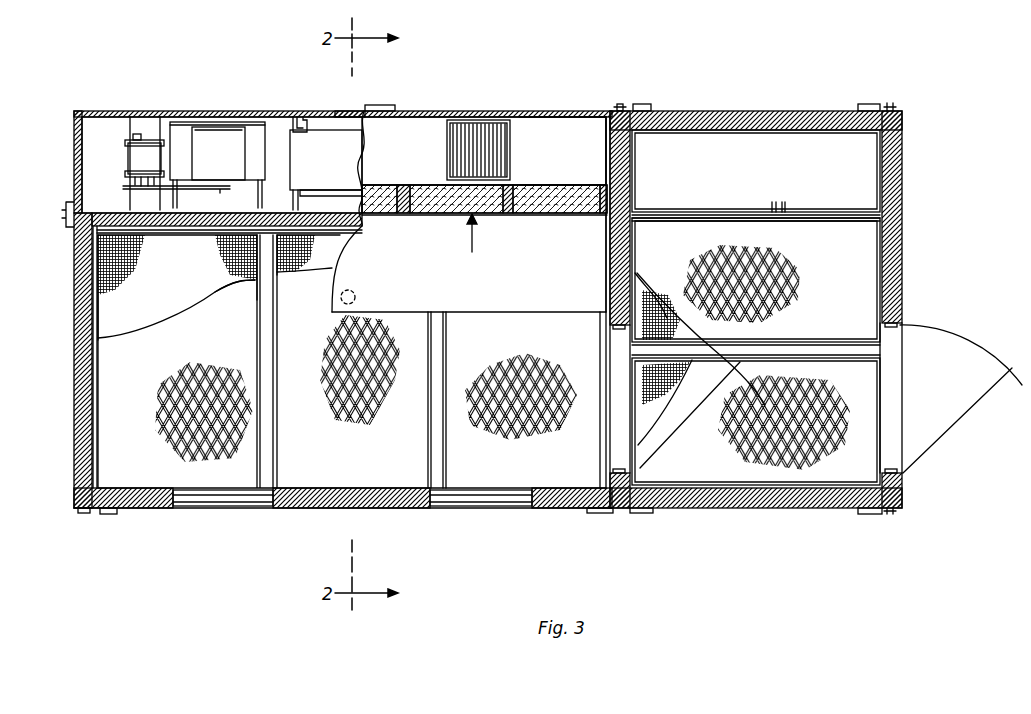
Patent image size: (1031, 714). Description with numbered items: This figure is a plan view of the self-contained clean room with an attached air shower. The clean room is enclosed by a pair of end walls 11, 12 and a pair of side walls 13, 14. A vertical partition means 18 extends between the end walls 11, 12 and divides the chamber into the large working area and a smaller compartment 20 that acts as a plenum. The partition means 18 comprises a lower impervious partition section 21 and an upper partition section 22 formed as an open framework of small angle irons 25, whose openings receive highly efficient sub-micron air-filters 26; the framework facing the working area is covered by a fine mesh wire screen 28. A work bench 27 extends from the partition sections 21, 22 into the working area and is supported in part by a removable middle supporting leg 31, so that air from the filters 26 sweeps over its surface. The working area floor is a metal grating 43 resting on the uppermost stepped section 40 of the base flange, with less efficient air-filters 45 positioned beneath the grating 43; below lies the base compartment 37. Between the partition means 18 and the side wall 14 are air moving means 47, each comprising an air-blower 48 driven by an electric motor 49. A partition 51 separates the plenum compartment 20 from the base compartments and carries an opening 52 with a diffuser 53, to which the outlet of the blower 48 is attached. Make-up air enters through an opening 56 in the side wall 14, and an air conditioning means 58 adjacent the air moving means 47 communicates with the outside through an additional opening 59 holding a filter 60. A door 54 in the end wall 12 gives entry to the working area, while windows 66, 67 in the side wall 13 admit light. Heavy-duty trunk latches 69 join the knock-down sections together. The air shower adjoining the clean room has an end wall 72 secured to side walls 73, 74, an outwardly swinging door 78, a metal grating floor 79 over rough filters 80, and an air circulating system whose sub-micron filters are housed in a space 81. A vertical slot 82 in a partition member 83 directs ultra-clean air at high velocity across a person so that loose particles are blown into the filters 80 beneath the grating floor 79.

The end wall 11 is at (76, 377).
The end wall 12 is at (608, 286).
The side wall 13 is at (322, 511).
The side wall 14 is at (548, 110).
The vertical partition means 18 is at (198, 235).
The compartment 20 is at (593, 146).
The partition section 21 is at (342, 262).
The partition section 22 is at (472, 246).
The angle irons 25 is at (506, 216).
The sub-micron air-filter 26 is at (557, 189).
The work bench 27 is at (498, 293).
The fine mesh wire screen 28 is at (590, 212).
The removable middle supporting leg 31 is at (354, 294).
The compartment 37 is at (117, 169).
The stepped section 40 is at (254, 284).
The metal grating 43 is at (187, 366).
The air-filters 45 is at (169, 307).
The air moving means 47 is at (180, 138).
The air-blower 48 is at (238, 132).
The electric motor 49 is at (137, 143).
The partition 51 is at (398, 146).
The opening 52 is at (447, 168).
The diffuser 53 is at (500, 164).
The door 54 is at (676, 434).
The make-up air opening 56 is at (380, 105).
The air conditioning means 58 is at (342, 176).
The opening 59 is at (298, 114).
The filter 60 is at (337, 110).
The window 66 is at (219, 508).
The window 67 is at (477, 508).
The heavy-duty trunk latches 69 is at (64, 224).
The end wall 72 is at (904, 236).
The side wall 73 is at (774, 510).
The side wall 74 is at (758, 113).
The outwardly swinging door 78 is at (978, 392).
The metal grating floor 79 is at (843, 296).
The rough filters 80 is at (666, 327).
The space 81 is at (741, 174).
The vertical slot 82 is at (781, 205).
The partition member 83 is at (840, 218).